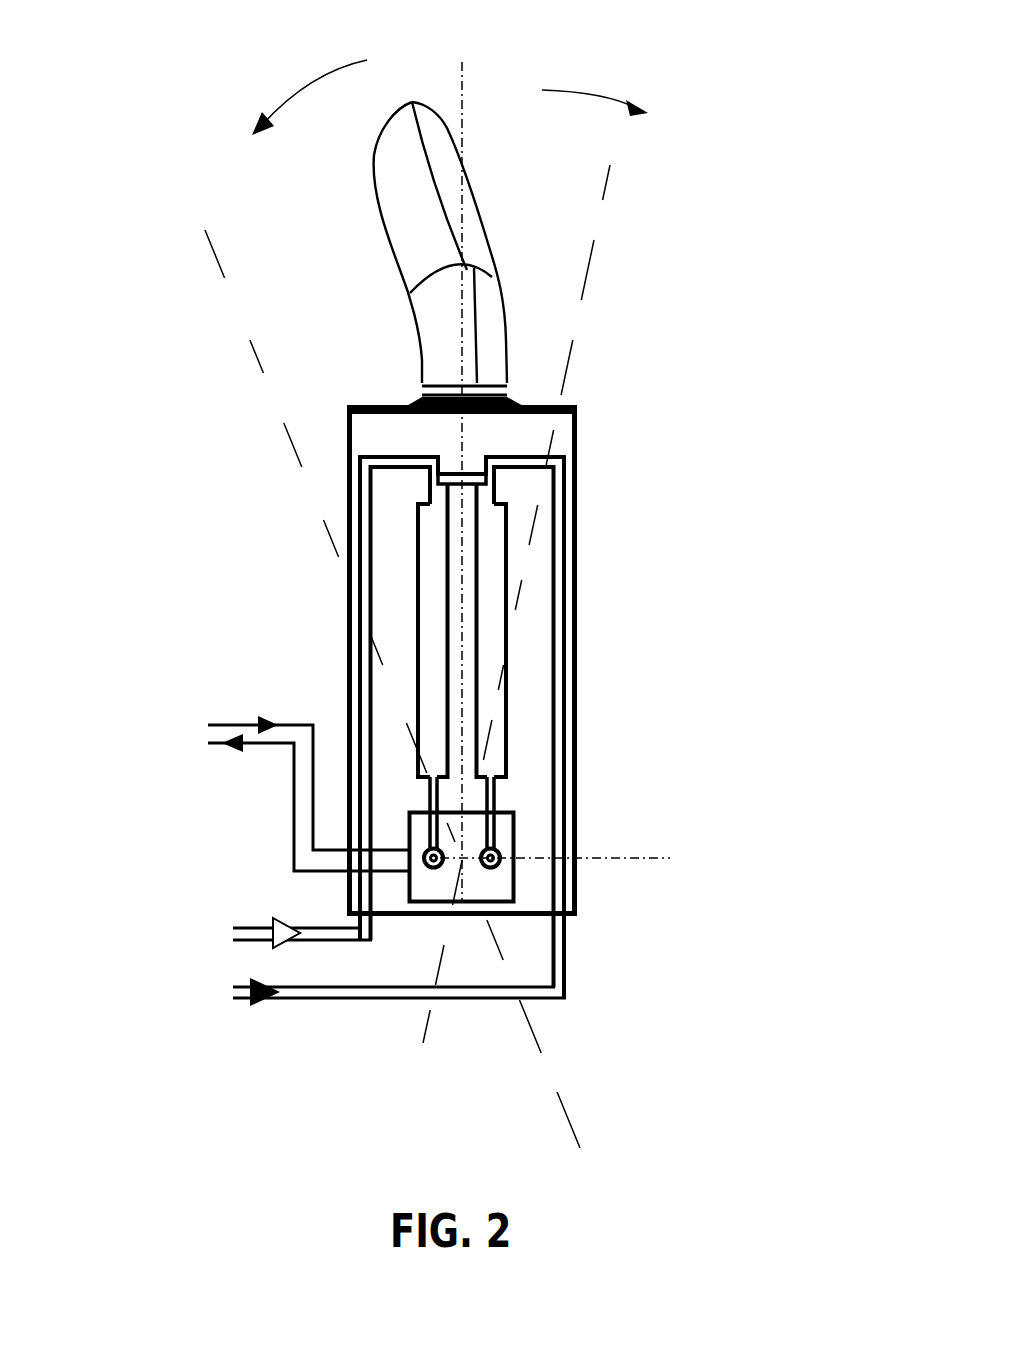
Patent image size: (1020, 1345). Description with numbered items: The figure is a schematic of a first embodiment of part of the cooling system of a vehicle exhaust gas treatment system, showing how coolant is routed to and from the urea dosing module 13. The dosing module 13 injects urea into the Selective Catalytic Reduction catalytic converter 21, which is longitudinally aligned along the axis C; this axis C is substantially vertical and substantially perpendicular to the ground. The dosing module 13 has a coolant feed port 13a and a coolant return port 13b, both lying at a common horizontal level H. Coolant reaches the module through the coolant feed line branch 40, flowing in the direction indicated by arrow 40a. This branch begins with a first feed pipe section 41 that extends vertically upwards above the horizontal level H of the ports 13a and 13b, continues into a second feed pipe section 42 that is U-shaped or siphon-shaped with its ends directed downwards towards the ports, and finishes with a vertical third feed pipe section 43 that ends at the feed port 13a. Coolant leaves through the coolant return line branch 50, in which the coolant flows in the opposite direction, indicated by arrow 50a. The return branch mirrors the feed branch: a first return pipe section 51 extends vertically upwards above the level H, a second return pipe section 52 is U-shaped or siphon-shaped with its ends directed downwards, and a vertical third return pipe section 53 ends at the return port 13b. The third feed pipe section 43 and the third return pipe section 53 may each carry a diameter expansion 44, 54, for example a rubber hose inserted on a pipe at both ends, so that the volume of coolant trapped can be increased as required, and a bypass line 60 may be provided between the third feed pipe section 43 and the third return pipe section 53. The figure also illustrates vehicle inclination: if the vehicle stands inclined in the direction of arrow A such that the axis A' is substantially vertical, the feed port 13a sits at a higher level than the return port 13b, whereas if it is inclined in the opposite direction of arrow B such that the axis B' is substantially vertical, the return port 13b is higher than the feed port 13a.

The urea dosing module 13 is at (510, 885).
The coolant feed port 13a is at (436, 852).
The coolant return port 13b is at (493, 856).
The Selective Catalytic Reduction catalytic converter 21 is at (577, 447).
The coolant feed line branch 40 is at (248, 935).
The arrow indicating coolant feed flow direction 40a is at (277, 937).
The first feed pipe section 41 is at (368, 515).
The second feed pipe section 42 is at (392, 457).
The third feed pipe section 43 is at (432, 797).
The diameter expansion 44 is at (430, 580).
The coolant return line branch 50 is at (495, 990).
The arrow indicating coolant return flow direction 50a is at (270, 1003).
The first return pipe section 51 is at (560, 625).
The second return pipe section 52 is at (533, 457).
The third return pipe section 53 is at (492, 818).
The diameter expansion 54 is at (500, 623).
The bypass line 60 is at (467, 481).
The arrow indicating vehicle inclination direction A is at (607, 108).
The arrow indicating opposite vehicle inclination direction B is at (295, 109).
The axis C is at (463, 97).
The horizontal level of the ports H is at (572, 827).
The axis A' is at (349, 689).
The axis B' is at (541, 604).